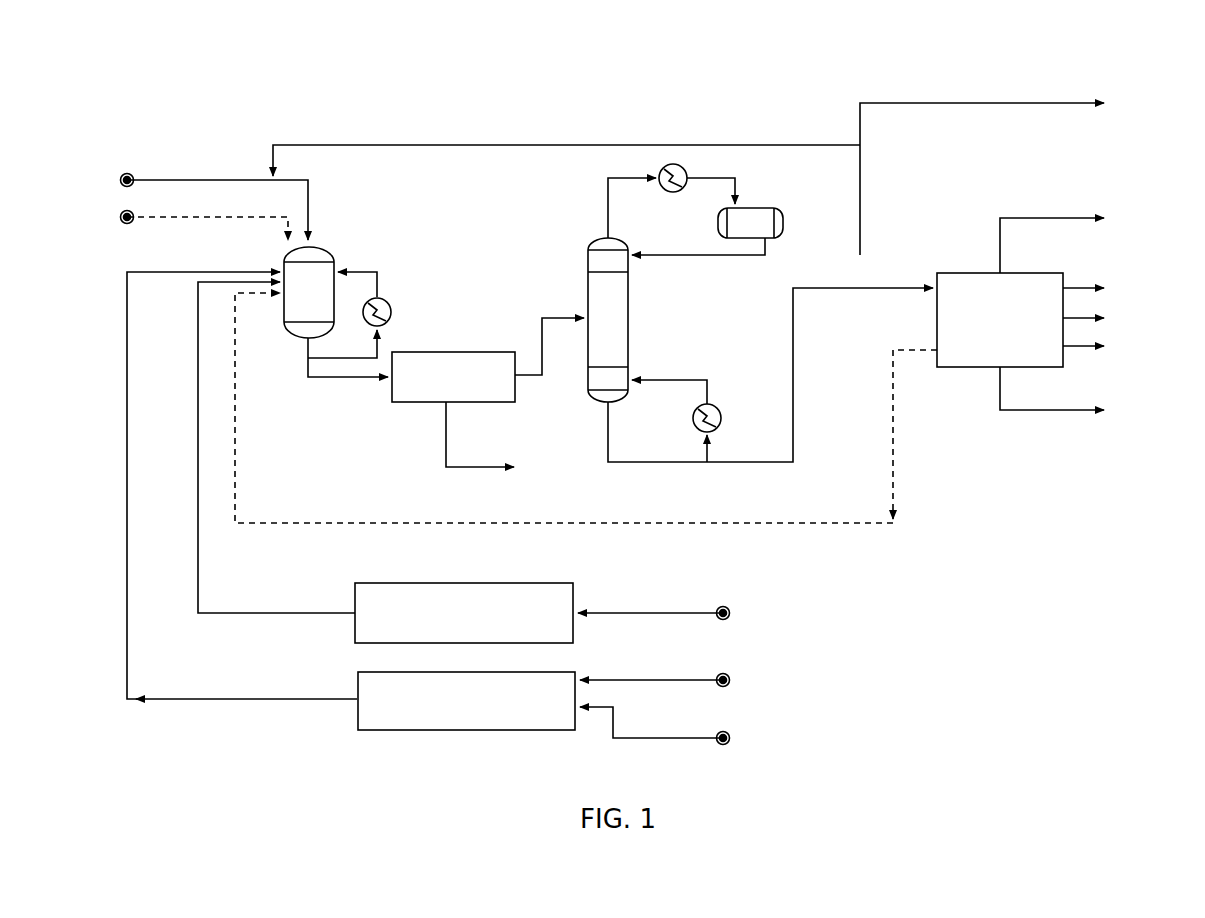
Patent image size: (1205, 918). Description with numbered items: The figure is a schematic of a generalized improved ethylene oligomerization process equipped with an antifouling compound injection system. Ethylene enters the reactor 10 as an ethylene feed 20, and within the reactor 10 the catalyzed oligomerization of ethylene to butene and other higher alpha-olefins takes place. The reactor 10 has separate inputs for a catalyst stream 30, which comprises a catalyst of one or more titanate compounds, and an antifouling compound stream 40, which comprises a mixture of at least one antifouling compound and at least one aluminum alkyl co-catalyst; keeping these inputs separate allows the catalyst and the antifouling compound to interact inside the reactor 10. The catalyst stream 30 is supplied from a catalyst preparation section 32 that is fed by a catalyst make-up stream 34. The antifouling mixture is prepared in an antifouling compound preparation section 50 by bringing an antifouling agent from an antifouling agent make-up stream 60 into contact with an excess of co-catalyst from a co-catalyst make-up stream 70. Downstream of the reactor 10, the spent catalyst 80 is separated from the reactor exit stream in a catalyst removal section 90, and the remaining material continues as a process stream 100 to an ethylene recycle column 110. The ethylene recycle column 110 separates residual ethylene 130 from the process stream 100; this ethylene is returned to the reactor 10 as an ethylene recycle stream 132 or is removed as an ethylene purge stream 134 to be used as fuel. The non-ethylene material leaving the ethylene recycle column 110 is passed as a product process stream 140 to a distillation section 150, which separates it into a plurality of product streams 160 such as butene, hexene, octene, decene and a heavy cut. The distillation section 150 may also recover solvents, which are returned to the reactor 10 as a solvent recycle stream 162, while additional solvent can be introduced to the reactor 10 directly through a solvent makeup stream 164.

The reactor 10 is at (317, 273).
The ethylene feed 20 is at (215, 178).
The catalyst stream 30 is at (197, 510).
The catalyst preparation section 32 is at (447, 612).
The catalyst make-up stream 34 is at (680, 613).
The antifouling compound stream 40 is at (128, 556).
The antifouling compound preparation section 50 is at (453, 707).
The antifouling agent make-up stream 60 is at (683, 738).
The co-catalyst make-up stream 70 is at (660, 680).
The spent catalyst 80 is at (445, 417).
The catalyst removal section 90 is at (443, 377).
The process stream 100 is at (543, 347).
The ethylene recycle column 110 is at (617, 348).
The residual ethylene 130 is at (608, 206).
The ethylene recycle stream 132 is at (582, 145).
The ethylene purge stream 134 is at (1005, 174).
The product process stream 140 is at (608, 462).
The distillation section 150 is at (973, 347).
The product streams 160 is at (1075, 315).
The solvent recycle stream 162 is at (830, 525).
The solvent makeup stream 164 is at (195, 218).